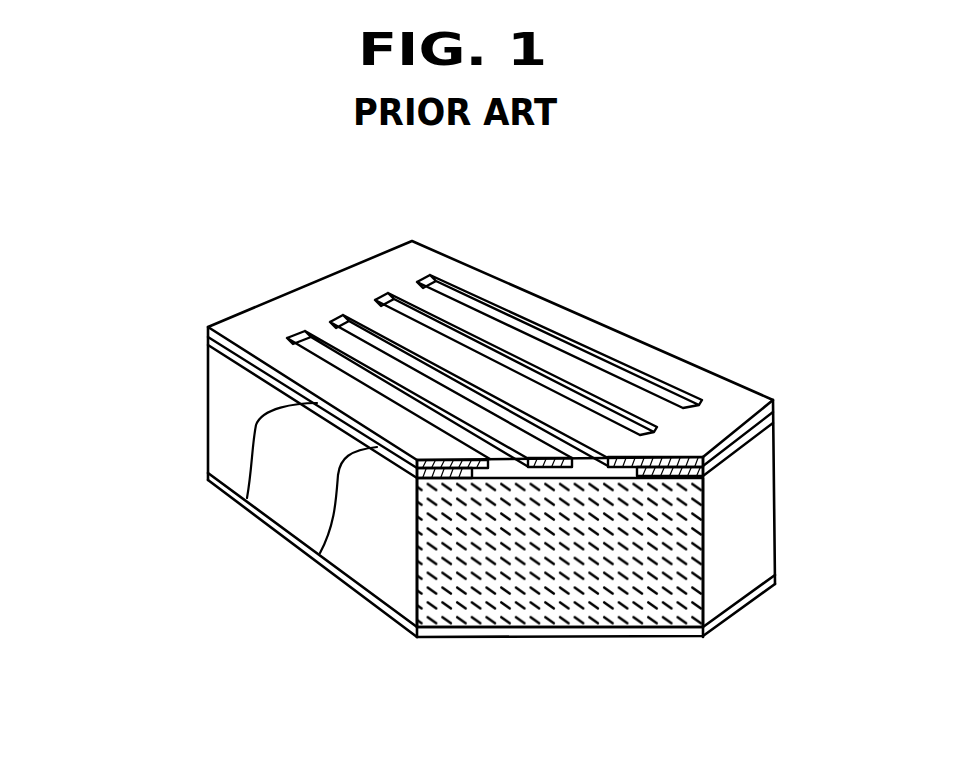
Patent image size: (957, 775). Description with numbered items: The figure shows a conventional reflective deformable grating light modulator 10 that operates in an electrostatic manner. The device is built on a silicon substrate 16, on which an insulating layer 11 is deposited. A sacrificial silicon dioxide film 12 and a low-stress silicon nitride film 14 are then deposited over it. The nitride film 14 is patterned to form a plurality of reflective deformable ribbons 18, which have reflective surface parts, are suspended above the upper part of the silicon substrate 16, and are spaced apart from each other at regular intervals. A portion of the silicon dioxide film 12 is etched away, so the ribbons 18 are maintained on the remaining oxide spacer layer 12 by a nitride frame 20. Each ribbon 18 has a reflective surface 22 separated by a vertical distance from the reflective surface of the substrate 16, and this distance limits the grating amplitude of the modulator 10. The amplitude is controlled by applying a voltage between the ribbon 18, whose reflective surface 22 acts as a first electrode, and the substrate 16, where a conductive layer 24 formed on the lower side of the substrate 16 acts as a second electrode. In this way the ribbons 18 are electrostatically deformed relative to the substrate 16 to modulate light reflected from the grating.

The reflective deformable grating light modulator 10 is at (138, 347).
The insulating layer 11 is at (775, 425).
The sacrificial silicon dioxide film 12 is at (773, 400).
The low-stress silicon nitride film 14 is at (320, 553).
The silicon substrate 16 is at (748, 550).
The reflective deformable ribbons 18 is at (323, 328).
The nitride frame 20 is at (590, 335).
The reflective surface 22 is at (247, 498).
The conductive layer 24 is at (600, 638).